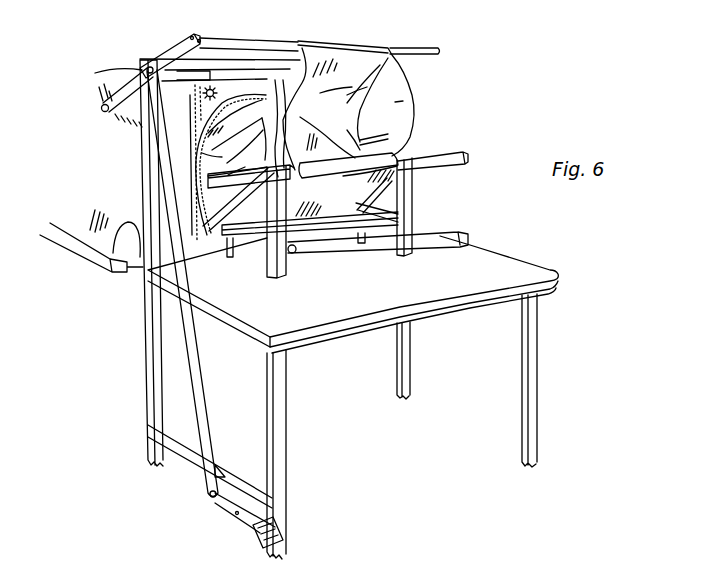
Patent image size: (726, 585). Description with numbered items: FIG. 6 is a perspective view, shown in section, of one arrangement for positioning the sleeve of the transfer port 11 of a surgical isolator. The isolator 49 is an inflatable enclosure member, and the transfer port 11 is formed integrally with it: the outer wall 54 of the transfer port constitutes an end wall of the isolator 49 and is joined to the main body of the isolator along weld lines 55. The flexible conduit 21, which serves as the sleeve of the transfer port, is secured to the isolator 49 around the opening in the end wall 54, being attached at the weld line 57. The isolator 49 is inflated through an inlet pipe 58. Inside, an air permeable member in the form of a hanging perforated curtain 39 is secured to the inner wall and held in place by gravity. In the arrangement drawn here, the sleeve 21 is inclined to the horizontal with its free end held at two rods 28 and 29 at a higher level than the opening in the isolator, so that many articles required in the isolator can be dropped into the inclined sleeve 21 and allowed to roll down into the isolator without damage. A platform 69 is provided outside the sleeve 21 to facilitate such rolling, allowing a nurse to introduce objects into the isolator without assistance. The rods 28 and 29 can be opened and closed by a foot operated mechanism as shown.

The transfer port 11 is at (432, 90).
The flexible conduit 21 is at (265, 96).
The rod 28 is at (423, 49).
The rod 29 is at (420, 160).
The hanging perforated curtain 39 is at (166, 60).
The isolator enclosure member 49 is at (80, 214).
The outer wall 54 is at (180, 115).
The weld lines 55 is at (113, 255).
The weld line 57 is at (200, 162).
The inlet pipe 58 is at (290, 255).
The platform 69 is at (338, 193).